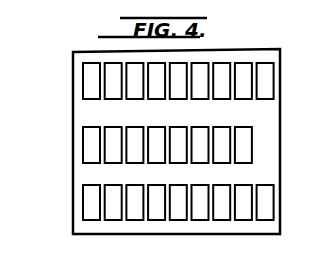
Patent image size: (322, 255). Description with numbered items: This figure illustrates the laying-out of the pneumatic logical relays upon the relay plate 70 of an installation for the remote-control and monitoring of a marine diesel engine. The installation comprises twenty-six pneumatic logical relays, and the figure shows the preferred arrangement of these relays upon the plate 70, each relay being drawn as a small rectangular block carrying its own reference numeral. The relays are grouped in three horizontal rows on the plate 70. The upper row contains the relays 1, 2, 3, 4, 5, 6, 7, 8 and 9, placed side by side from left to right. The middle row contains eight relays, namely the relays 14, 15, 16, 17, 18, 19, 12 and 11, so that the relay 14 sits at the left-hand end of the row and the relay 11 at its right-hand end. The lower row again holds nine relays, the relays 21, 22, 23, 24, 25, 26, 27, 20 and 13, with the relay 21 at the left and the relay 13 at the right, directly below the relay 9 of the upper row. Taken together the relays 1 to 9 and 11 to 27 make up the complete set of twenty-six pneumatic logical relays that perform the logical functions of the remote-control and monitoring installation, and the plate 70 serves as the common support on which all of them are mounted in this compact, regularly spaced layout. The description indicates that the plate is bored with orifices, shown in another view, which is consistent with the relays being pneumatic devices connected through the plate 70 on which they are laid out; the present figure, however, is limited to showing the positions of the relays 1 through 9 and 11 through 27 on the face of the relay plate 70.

The relay plate 70 is at (272, 158).
The pneumatic logical relay 1 is at (91, 81).
The pneumatic logical relay 2 is at (113, 81).
The pneumatic logical relay 3 is at (134, 81).
The pneumatic logical relay 4 is at (156, 81).
The pneumatic logical relay 5 is at (178, 81).
The pneumatic logical relay 6 is at (200, 81).
The pneumatic logical relay 7 is at (221, 81).
The pneumatic logical relay 8 is at (243, 81).
The pneumatic logical relay 9 is at (265, 81).
The pneumatic logical relay 11 is at (243, 145).
The pneumatic logical relay 12 is at (221, 145).
The pneumatic logical relay 13 is at (265, 202).
The pneumatic logical relay 14 is at (91, 145).
The pneumatic logical relay 15 is at (113, 145).
The pneumatic logical relay 16 is at (134, 145).
The pneumatic logical relay 17 is at (156, 145).
The pneumatic logical relay 18 is at (178, 145).
The pneumatic logical relay 19 is at (200, 145).
The pneumatic logical relay 20 is at (243, 202).
The pneumatic logical relay 21 is at (91, 202).
The pneumatic logical relay 22 is at (113, 202).
The pneumatic logical relay 23 is at (134, 202).
The pneumatic logical relay 24 is at (156, 202).
The pneumatic logical relay 25 is at (178, 202).
The pneumatic logical relay 26 is at (200, 202).
The pneumatic logical relay 27 is at (221, 202).